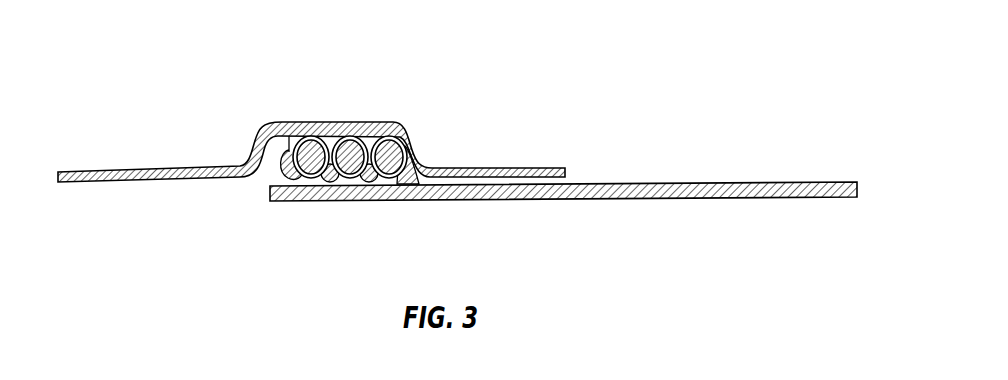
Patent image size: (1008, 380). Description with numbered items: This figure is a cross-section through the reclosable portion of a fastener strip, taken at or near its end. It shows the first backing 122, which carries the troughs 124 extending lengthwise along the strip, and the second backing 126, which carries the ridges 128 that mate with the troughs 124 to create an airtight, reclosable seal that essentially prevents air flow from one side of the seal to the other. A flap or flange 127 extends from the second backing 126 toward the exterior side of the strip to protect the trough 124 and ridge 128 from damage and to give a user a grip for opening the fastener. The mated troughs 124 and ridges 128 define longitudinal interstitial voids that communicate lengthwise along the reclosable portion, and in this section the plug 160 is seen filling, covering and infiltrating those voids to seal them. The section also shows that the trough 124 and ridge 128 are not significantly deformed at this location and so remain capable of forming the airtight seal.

The first backing 122 is at (797, 190).
The troughs 124 is at (303, 200).
The second backing 126 is at (112, 178).
The flange 127 is at (548, 168).
The ridges 128 is at (378, 126).
The plug 160 is at (368, 201).